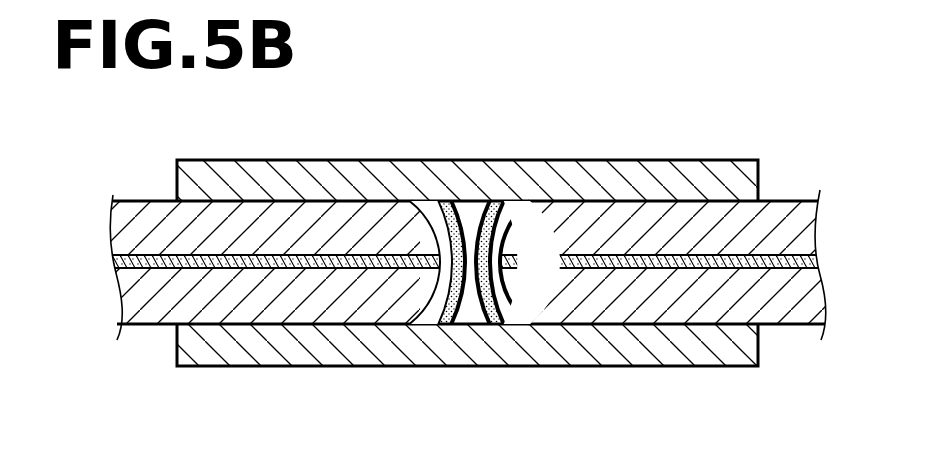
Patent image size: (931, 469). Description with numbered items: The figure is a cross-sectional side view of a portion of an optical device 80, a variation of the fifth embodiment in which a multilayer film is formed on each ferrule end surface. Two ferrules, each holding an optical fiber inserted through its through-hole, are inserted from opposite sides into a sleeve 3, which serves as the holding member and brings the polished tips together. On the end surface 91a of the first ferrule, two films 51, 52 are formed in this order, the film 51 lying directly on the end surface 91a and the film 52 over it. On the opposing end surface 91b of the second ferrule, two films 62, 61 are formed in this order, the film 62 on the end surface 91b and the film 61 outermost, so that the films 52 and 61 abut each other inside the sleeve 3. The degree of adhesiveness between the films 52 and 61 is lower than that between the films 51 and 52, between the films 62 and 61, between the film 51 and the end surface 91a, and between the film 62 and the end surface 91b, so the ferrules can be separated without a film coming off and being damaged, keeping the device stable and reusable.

The optical device 80 is at (735, 76).
The sleeve 3 is at (370, 180).
The film 51 is at (425, 326).
The film 52 is at (455, 322).
The film 61 is at (485, 200).
The film 62 is at (513, 201).
The end surface 91a is at (428, 225).
The end surface 91b is at (508, 312).